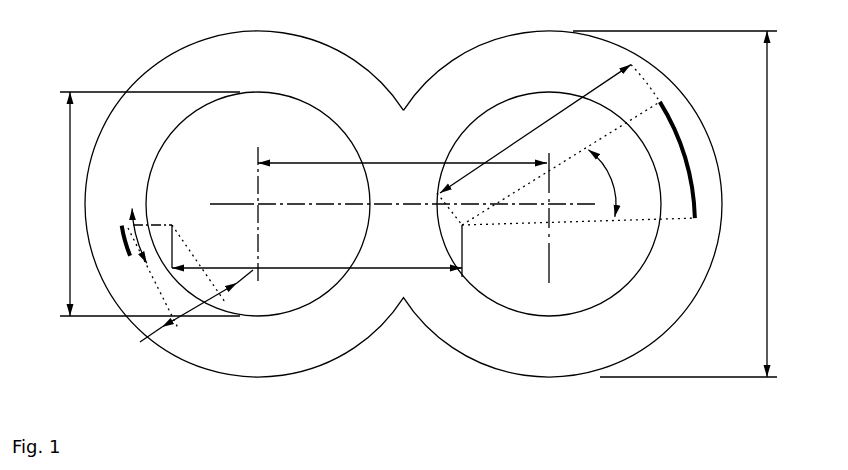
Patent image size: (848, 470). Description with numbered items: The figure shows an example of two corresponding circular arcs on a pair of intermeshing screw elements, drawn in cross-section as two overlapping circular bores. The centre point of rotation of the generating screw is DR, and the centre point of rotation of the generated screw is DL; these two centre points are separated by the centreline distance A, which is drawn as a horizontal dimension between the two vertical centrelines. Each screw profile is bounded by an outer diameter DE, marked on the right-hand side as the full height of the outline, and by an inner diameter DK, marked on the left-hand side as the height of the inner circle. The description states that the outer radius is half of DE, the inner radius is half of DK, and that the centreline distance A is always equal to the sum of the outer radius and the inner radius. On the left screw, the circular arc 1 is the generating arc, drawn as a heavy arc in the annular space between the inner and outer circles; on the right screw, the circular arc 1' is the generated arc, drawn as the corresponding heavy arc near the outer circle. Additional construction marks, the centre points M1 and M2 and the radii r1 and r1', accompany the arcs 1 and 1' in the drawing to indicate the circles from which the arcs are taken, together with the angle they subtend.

The circular arc 1 is at (162, 276).
The circular arc 1' is at (604, 145).
The inner diameter DK is at (131, 204).
The outer diameter DE is at (698, 204).
The centreline distance A is at (359, 202).
The centre point of rotation of the generating screw DR is at (256, 203).
The centre point of rotation of the generated screw DL is at (552, 208).
The center of first screw M1 is at (208, 206).
The center of second screw M2 is at (473, 235).
The tip radius of flight 1 r1 is at (178, 319).
The tip radius of flight 1' r1' is at (535, 129).